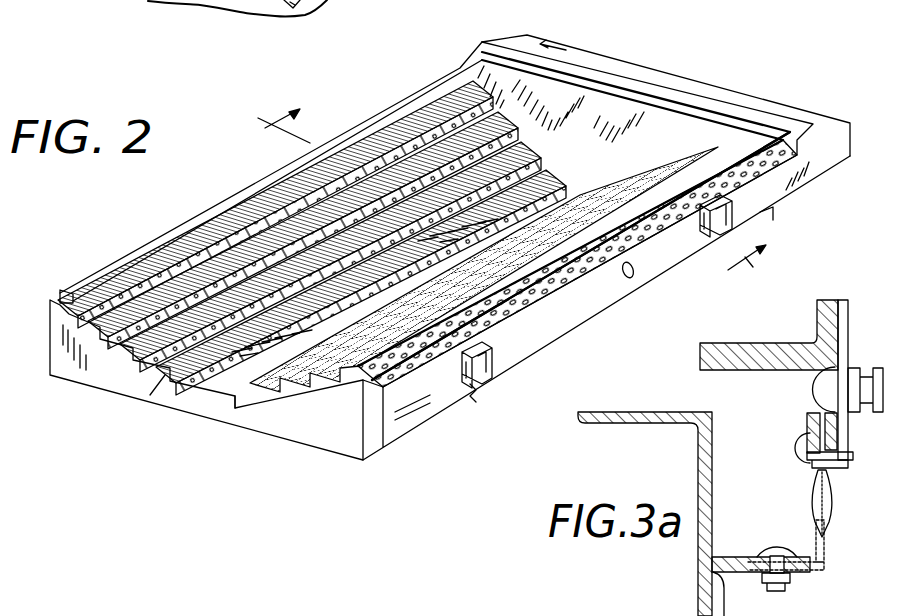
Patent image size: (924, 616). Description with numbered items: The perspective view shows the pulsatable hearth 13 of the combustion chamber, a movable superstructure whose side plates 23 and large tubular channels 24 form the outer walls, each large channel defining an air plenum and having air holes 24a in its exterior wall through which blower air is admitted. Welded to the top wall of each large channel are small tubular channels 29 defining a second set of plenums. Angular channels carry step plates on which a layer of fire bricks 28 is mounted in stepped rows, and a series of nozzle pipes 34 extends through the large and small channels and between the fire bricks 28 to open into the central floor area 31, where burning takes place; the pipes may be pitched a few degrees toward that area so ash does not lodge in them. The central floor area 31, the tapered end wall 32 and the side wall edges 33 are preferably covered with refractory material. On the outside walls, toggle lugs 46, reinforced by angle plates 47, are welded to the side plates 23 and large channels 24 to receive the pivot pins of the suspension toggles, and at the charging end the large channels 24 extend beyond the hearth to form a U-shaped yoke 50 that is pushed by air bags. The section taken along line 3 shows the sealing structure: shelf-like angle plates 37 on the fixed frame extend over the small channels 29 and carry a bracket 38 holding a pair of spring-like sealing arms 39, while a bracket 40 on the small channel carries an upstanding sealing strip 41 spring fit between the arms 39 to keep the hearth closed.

In FIG. 2, the hearth 13 is at (130, 402).
In FIG. 2, the U-shaped yoke 50 is at (683, 78).
In FIG. 2, the nozzle pipes 34 is at (182, 408).
In FIG. 2, the central floor area 31 is at (392, 290).
In FIG. 2, the end wall 32 is at (602, 131).
In FIG. 2, the side plates 23 is at (417, 418).
In FIG. 2, the large tubular channels 24 is at (532, 337).
In FIG. 2, the air holes 24a is at (632, 278).
In FIG. 2, the small tubular channels 29 is at (565, 282).
In FIG. 3a, the small tubular channels 29 is at (697, 589).
In FIG. 2, the toggle lug 46 is at (493, 380).
In FIG. 2, the angle plates 47 is at (467, 394).
In FIG. 2, the fire bricks 28 is at (187, 391).
In FIG. 2, the side wall edges 33 is at (283, 400).
In FIG. 2, the section line 3 is at (523, 181).
In FIG. 3a, the angle plates 37 is at (776, 343).
In FIG. 3a, the bracket 38 is at (835, 437).
In FIG. 3a, the spring-like sealing arms 39 is at (850, 502).
In FIG. 3a, the bracket 40 is at (733, 555).
In FIG. 3a, the sealing strip 41 is at (822, 550).